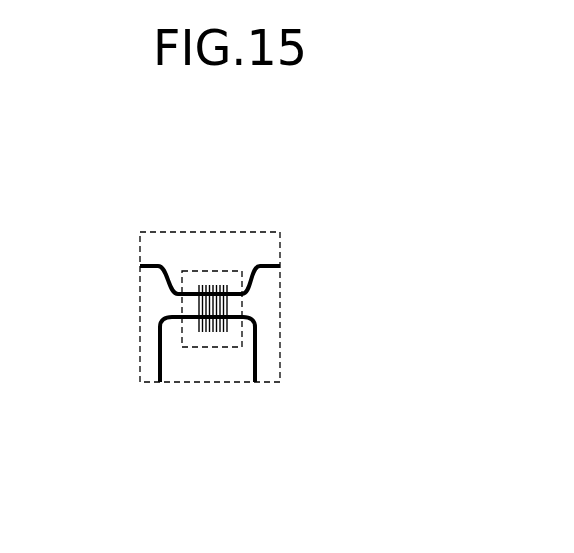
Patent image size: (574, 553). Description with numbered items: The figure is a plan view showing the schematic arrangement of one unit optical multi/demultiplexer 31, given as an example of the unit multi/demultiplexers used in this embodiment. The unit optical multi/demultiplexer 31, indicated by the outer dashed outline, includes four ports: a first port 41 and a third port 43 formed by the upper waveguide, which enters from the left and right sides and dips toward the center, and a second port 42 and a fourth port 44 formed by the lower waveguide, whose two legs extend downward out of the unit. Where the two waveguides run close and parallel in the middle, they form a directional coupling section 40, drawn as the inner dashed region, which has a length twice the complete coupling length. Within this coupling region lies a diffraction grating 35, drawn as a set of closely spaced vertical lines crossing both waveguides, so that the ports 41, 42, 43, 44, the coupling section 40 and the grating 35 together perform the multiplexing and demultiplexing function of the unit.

The unit optical multi/demultiplexer 31 is at (284, 222).
The diffraction grating 35 is at (212, 348).
The directional coupling section 40 is at (202, 272).
The first port 41 is at (140, 267).
The second port 42 is at (160, 384).
The third port 43 is at (282, 264).
The fourth port 44 is at (255, 384).